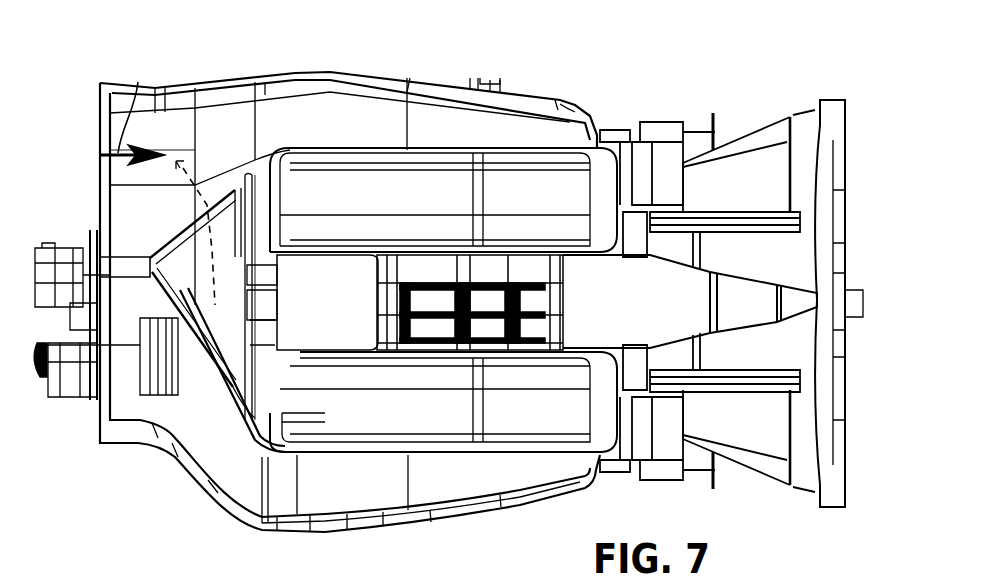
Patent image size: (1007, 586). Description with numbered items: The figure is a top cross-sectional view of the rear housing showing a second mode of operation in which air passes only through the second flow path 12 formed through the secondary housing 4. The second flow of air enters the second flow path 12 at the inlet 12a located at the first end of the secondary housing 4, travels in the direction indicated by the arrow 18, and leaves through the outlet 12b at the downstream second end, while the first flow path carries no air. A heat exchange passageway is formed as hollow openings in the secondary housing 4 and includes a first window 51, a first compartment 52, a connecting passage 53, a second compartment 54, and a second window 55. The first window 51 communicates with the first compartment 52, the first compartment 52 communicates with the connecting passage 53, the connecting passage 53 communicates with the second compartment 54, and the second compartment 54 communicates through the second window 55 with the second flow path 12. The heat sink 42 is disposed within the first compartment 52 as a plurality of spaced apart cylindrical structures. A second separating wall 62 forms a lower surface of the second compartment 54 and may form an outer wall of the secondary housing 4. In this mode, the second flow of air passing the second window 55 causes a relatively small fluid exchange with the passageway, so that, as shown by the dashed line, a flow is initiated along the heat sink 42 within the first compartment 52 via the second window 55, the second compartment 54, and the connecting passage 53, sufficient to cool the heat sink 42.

The secondary housing 4 is at (591, 107).
The second flow path 12 is at (280, 132).
The inlet into the second flow path 12a is at (106, 135).
The outlet of the second flow path 12b is at (847, 170).
The arrow 18 is at (135, 105).
The heat sink 42 is at (173, 397).
The first window 51 is at (140, 428).
The first compartment 52 is at (143, 356).
The connecting passage 53 is at (228, 320).
The second compartment 54 is at (228, 273).
The second window 55 is at (196, 224).
The second separating wall 62 is at (263, 332).